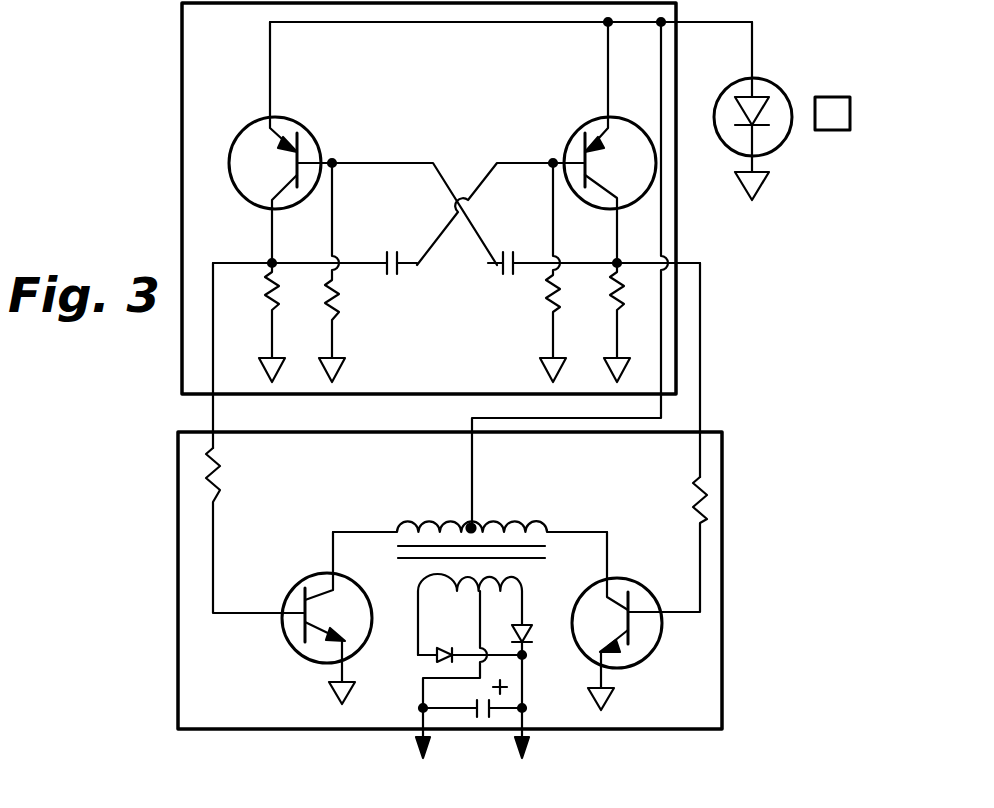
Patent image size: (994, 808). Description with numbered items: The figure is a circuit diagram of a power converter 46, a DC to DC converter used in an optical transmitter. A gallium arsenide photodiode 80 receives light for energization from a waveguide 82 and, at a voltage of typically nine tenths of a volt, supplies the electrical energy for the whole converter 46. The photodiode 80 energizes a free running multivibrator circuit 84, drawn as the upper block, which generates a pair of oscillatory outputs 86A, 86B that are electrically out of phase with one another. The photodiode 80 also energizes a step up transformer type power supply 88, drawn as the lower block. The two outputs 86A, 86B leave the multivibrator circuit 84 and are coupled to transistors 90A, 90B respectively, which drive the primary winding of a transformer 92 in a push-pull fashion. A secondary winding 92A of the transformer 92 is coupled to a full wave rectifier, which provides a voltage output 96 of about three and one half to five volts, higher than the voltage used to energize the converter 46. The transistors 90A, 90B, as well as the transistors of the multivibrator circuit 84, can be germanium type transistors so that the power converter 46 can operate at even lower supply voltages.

The power converter 46 is at (738, 345).
The gallium arsenide photodiode 80 is at (766, 84).
The waveguide 82 is at (840, 97).
The free running multivibrator circuit 84 is at (182, 163).
The oscillatory output 86A is at (212, 415).
The oscillatory output 86B is at (703, 405).
The step up transformer type power supply 88 is at (178, 587).
The transistor 90A is at (300, 573).
The transistor 90B is at (627, 580).
The transformer 92 is at (515, 520).
The secondary winding 92A is at (424, 583).
The voltage output 96 is at (472, 738).